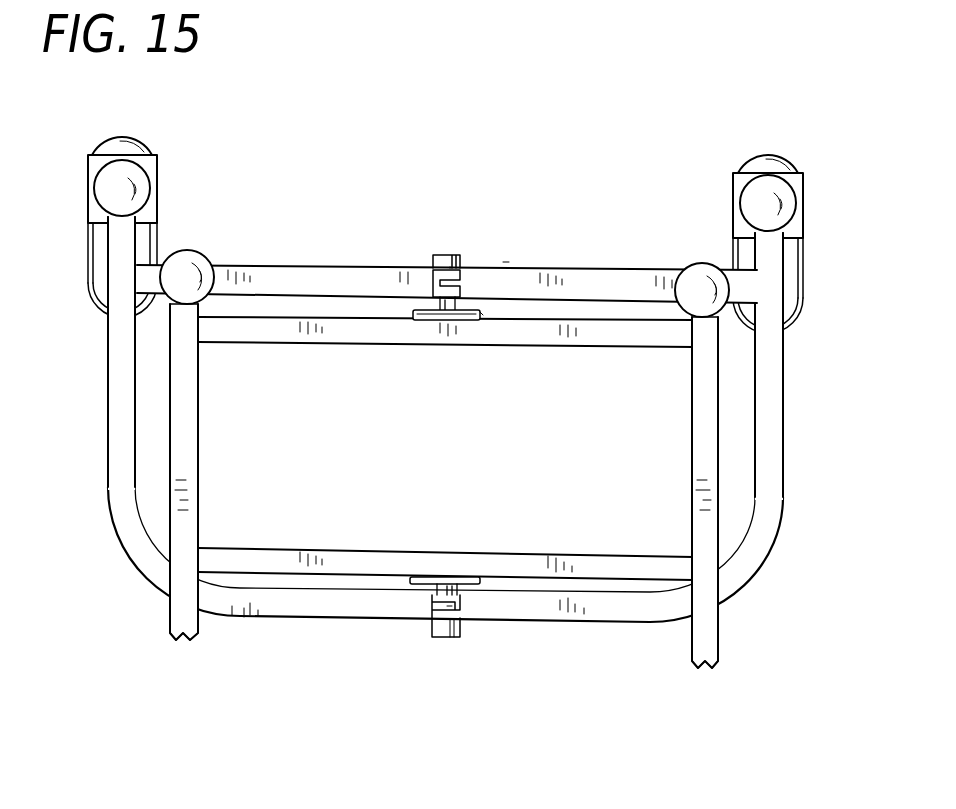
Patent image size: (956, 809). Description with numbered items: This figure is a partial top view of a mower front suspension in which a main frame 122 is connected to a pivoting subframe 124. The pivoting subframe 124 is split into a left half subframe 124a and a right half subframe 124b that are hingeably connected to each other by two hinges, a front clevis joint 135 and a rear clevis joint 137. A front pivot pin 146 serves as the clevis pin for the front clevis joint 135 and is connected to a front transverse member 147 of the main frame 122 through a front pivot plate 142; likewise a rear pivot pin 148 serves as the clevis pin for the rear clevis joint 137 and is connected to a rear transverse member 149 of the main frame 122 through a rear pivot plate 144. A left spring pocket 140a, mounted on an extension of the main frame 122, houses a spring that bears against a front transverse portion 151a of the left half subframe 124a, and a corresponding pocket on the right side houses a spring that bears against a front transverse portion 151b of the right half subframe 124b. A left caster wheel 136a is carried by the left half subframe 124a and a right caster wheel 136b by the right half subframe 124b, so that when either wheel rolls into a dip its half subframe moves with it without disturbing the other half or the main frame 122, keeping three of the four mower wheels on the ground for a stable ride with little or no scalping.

The main frame 122 is at (182, 533).
The pivoting subframe 124 is at (503, 262).
The left half subframe 124a is at (115, 470).
The right half subframe 124b is at (770, 395).
The front clevis joint 135 is at (470, 308).
The left caster wheel 136a is at (135, 143).
The right caster wheel 136b is at (767, 165).
The rear clevis joint 137 is at (447, 606).
The left spring pocket 140a is at (180, 275).
The front pivot plate 142 is at (483, 315).
The rear pivot plate 144 is at (428, 575).
The front pivot pin 146 is at (418, 290).
The front transverse member 147 is at (332, 330).
The rear pivot pin 148 is at (483, 590).
The rear transverse member 149 is at (632, 560).
The front transverse portion of left half subframe 151a is at (275, 280).
The front transverse portion of right half subframe 151b is at (623, 283).